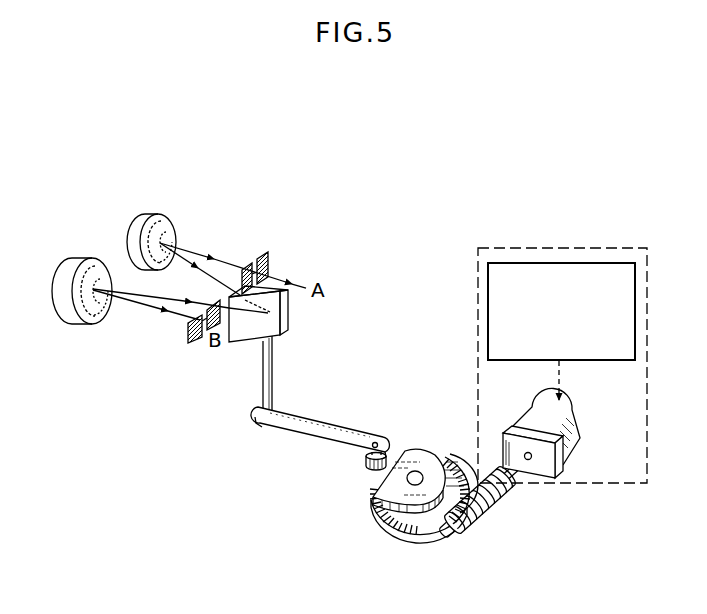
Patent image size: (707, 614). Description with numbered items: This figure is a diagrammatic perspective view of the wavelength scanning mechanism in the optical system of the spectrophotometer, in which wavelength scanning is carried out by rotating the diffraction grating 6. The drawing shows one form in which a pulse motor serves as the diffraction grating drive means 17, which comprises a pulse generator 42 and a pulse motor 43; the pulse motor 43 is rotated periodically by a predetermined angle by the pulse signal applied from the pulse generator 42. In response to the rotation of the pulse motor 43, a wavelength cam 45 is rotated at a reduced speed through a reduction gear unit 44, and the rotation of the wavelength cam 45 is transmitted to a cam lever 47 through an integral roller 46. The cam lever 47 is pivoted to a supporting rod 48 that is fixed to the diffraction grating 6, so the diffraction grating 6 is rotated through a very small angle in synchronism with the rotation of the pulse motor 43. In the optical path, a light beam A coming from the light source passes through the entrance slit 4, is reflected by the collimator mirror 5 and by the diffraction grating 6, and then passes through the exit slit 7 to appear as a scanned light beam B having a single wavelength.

The entrance slit 4 is at (268, 257).
The collimator mirror 5 is at (131, 227).
The diffraction grating 6 is at (283, 313).
The exit slit 7 is at (190, 337).
The diffraction grating drive means 17 is at (613, 247).
The pulse generator 42 is at (637, 314).
The pulse motor 43 is at (582, 413).
The reduction gear unit 44 is at (468, 533).
The wavelength cam 45 is at (420, 451).
The integral roller 46 is at (367, 468).
The cam lever 47 is at (308, 418).
The supporting rod 48 is at (273, 360).